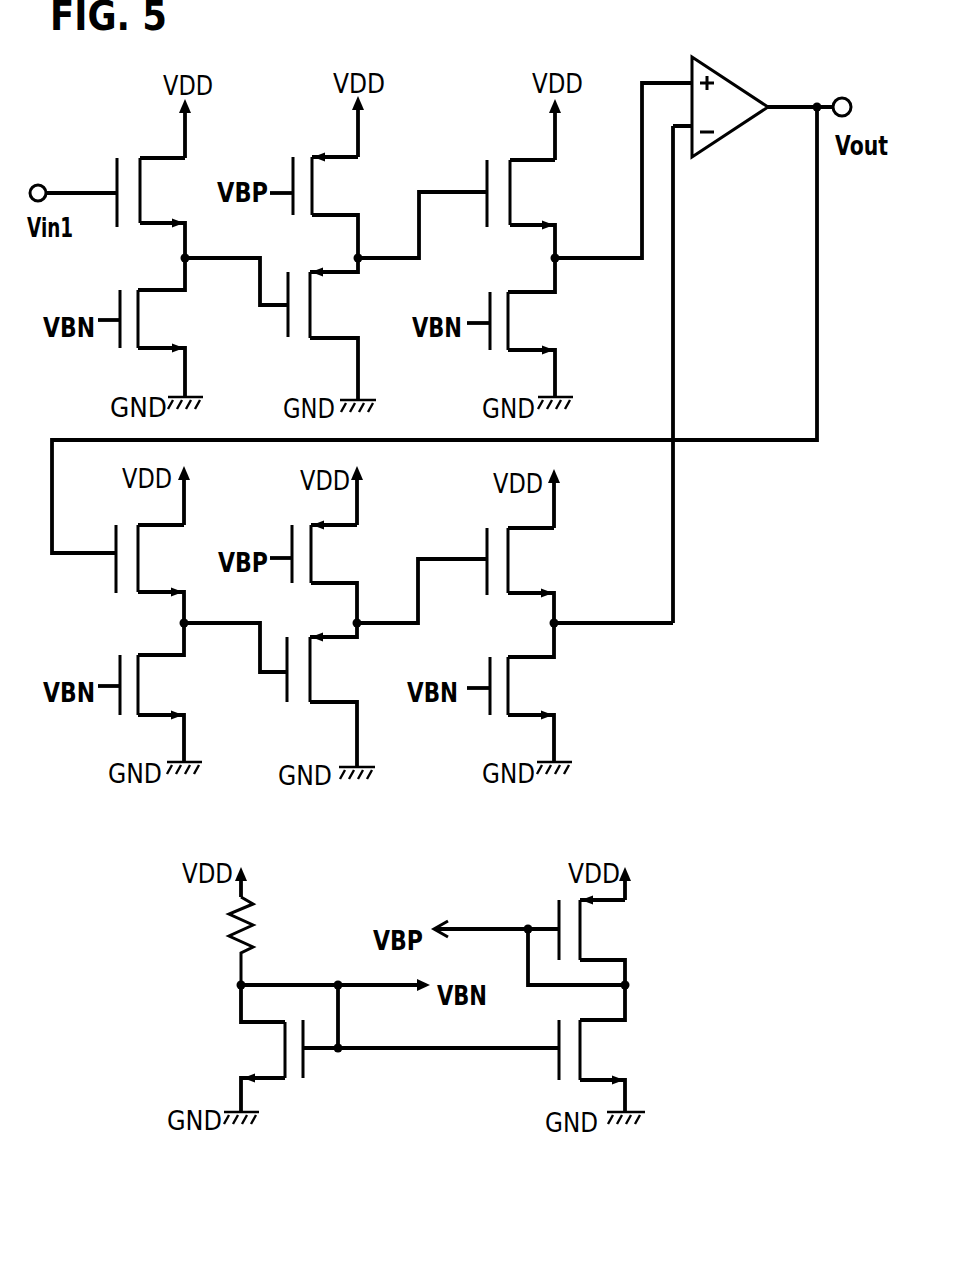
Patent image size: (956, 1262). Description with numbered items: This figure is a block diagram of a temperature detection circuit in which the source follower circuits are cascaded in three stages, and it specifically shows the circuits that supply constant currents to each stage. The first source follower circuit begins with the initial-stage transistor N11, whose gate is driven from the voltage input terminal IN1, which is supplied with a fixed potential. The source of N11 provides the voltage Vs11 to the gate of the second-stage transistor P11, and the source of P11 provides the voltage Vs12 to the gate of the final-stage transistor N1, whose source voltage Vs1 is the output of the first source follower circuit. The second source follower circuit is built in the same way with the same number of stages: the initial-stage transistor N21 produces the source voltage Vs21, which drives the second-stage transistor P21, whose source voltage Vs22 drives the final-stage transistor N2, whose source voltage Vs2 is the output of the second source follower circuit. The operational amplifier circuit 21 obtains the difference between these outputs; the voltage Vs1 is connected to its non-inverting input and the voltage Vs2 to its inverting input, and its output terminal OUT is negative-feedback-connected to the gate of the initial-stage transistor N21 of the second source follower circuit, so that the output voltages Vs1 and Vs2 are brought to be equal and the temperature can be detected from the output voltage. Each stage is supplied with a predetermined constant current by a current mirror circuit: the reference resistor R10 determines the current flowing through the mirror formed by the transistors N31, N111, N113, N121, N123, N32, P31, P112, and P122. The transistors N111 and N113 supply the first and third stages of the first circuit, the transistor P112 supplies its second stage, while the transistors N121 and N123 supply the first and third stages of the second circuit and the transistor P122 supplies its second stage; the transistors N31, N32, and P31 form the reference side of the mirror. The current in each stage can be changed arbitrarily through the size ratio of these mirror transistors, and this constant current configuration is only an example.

The voltage input terminal IN1 is at (46, 185).
The initial-stage source follower transistor N11 is at (186, 173).
The source voltage of N11 Vs11 is at (190, 254).
The current mirror transistor N111 is at (177, 323).
The current mirror transistor P112 is at (355, 190).
The source voltage of P11 Vs12 is at (378, 242).
The second-stage source follower transistor P11 is at (345, 308).
The first source follower circuit transistor N1 is at (548, 193).
The output voltage of first source follower circuit Vs1 is at (560, 254).
The current mirror transistor N113 is at (550, 330).
The operational amplifier circuit 21 is at (738, 83).
The output terminal OUT is at (838, 98).
The initial-stage source follower transistor N21 is at (185, 542).
The source voltage of N21 Vs21 is at (189, 619).
The current mirror transistor N121 is at (168, 698).
The current mirror transistor P122 is at (352, 548).
The source voltage of P21 Vs22 is at (361, 619).
The second-stage source follower transistor P21 is at (347, 673).
The second source follower circuit transistor N2 is at (547, 565).
The output voltage of second source follower circuit Vs2 is at (559, 619).
The current mirror transistor N123 is at (550, 695).
The reference resistor R10 is at (230, 912).
The current mirror transistor N31 is at (245, 1053).
The current mirror transistor P31 is at (623, 930).
The current mirror transistor N32 is at (615, 1050).